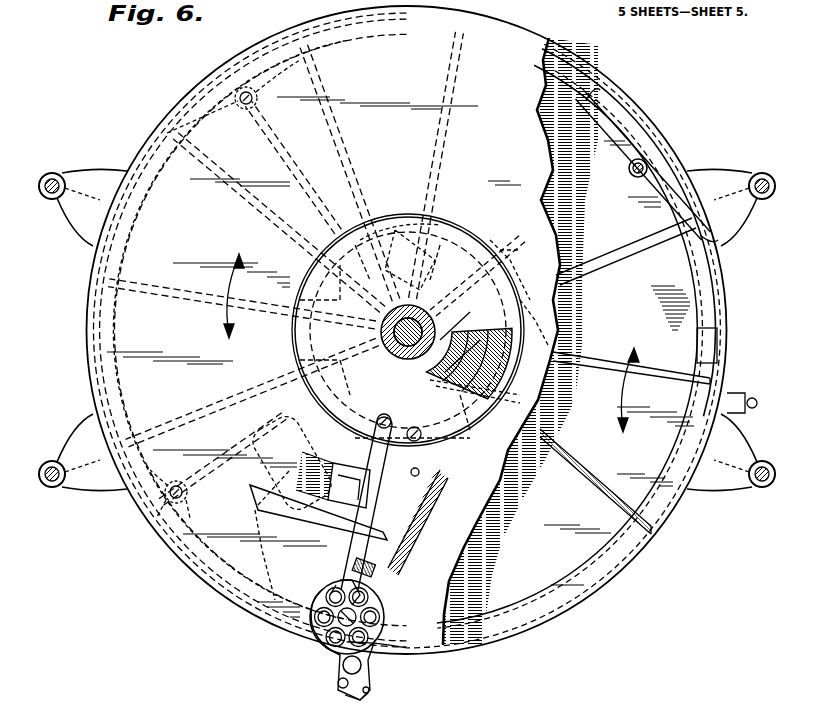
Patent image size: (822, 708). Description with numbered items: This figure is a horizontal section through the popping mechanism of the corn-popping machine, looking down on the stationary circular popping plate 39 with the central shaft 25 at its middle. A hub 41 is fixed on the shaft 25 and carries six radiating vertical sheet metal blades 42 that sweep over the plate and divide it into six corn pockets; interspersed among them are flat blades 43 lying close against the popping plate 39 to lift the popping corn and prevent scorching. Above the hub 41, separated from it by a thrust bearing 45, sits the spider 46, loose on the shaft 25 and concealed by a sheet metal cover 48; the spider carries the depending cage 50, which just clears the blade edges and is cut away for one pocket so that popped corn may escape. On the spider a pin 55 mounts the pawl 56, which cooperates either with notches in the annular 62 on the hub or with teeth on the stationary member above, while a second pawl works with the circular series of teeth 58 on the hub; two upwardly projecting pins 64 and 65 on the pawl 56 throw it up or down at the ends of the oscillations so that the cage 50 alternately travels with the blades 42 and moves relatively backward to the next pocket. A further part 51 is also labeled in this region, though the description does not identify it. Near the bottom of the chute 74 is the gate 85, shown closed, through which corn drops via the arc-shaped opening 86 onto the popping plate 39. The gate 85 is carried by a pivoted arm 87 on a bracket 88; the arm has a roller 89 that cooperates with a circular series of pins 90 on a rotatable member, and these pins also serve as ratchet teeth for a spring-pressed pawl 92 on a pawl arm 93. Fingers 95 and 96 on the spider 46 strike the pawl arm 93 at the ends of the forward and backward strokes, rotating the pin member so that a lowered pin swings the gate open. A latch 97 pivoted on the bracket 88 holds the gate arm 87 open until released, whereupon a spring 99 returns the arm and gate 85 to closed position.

The shaft 25 is at (450, 325).
The popping plate 39 is at (620, 573).
The hub 41 is at (451, 230).
The vertical sheet metal blades 42 is at (595, 105).
The flat blades 43 is at (655, 533).
The thrust bearing 45 is at (290, 338).
The spider 46 is at (278, 140).
The sheet metal cover 48 is at (215, 545).
The cage 50 is at (652, 130).
The cam follower 51 is at (440, 340).
The pin 55 is at (407, 257).
The pawl 56 is at (500, 362).
The teeth 58 is at (445, 372).
The annular 62 is at (490, 380).
The pin 64 is at (514, 276).
The pin 65 is at (534, 322).
The chute 74 is at (292, 463).
The gate 85 is at (330, 524).
The arc-shaped opening 86 is at (320, 470).
The pivoted arm 87 is at (335, 586).
The bracket 88 is at (405, 538).
The roller 89 is at (330, 595).
The pins 90 is at (385, 611).
The spring-pressed pawl 92 is at (362, 665).
The pawl arm 93 is at (368, 690).
The finger 95 is at (752, 398).
The finger 96 is at (340, 686).
The latch 97 is at (250, 508).
The spring 99 is at (376, 576).